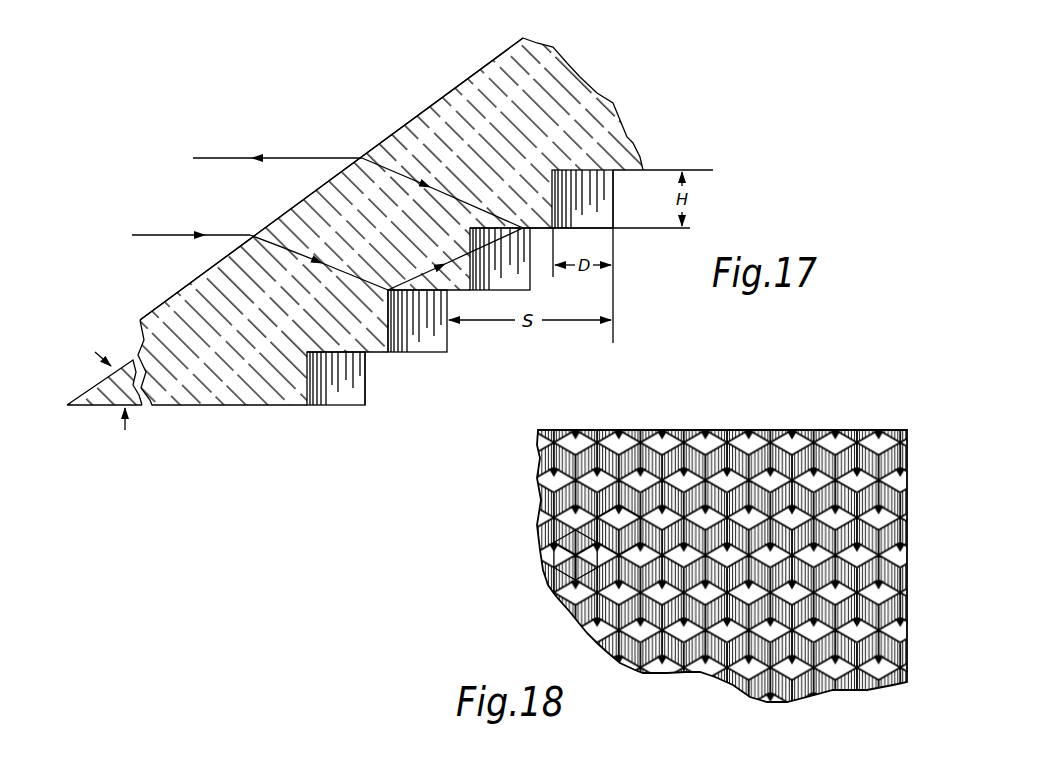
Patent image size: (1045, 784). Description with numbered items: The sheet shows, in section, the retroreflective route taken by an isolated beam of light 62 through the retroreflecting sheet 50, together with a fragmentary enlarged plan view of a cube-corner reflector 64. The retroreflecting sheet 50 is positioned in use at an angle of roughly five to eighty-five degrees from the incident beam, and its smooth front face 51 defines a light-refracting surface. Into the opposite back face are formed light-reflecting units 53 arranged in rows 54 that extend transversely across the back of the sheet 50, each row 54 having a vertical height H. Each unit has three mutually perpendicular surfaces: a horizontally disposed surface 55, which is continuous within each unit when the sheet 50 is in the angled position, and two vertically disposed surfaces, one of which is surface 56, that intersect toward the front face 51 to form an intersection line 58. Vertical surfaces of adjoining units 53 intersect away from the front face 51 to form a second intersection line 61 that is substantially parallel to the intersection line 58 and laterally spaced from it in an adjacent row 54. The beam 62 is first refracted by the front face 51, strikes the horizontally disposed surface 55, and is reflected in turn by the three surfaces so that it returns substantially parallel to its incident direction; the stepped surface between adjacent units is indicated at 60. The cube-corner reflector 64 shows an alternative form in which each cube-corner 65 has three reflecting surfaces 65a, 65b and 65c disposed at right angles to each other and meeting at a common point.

In FIG. 17, the retroreflecting sheet 50 is at (466, 72).
In FIG. 17, the front face 51 is at (399, 127).
In FIG. 17, the light-reflecting units 53 is at (409, 333).
In FIG. 17, the rows 54 is at (588, 180).
In FIG. 17, the horizontally disposed surface 55 is at (614, 192).
In FIG. 17, the vertically disposed surface 56 is at (420, 336).
In FIG. 17, the intersection line 58 is at (320, 387).
In FIG. 17, the horizontal step face 60 is at (541, 224).
In FIG. 17, the second intersection line 61 is at (368, 384).
In FIG. 17, the beam of light 62 is at (235, 158).
In FIG. 18, the cube-corner reflector 64 is at (797, 428).
In FIG. 18, the cube-corner 65 is at (622, 525).
In FIG. 18, the reflecting surface 65a is at (564, 565).
In FIG. 18, the reflecting surface 65b is at (586, 568).
In FIG. 18, the reflecting surface 65c is at (568, 584).